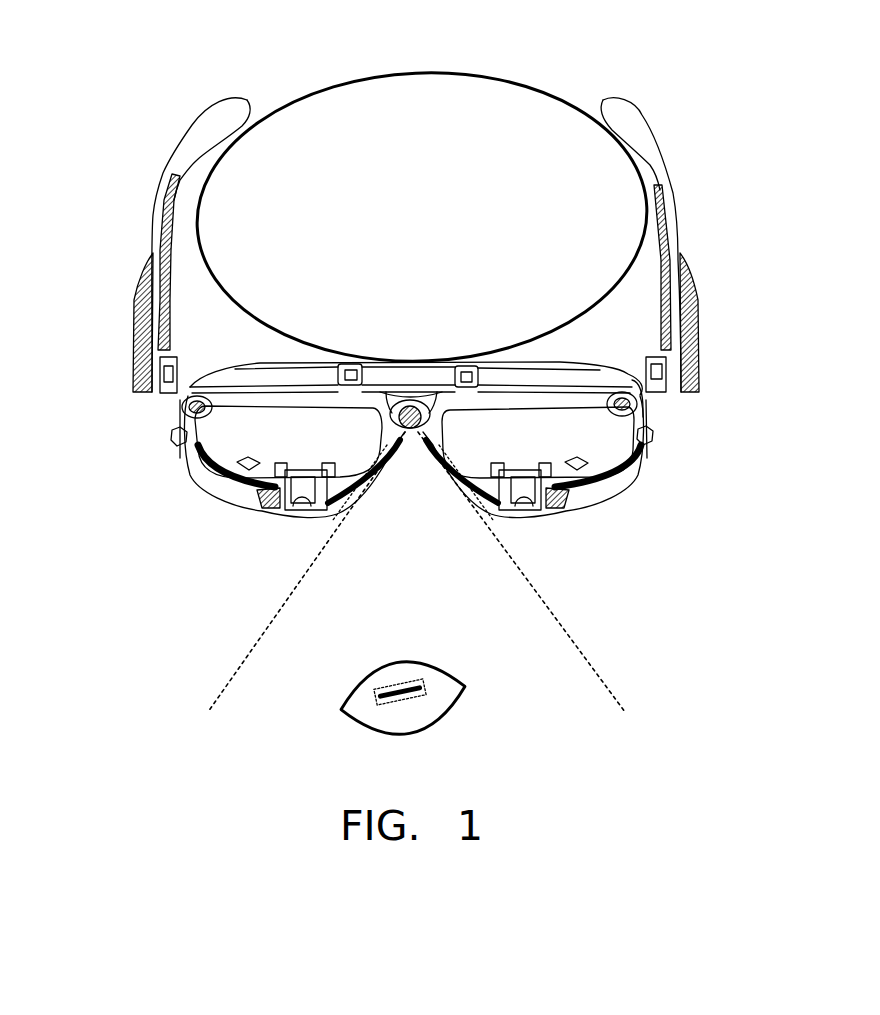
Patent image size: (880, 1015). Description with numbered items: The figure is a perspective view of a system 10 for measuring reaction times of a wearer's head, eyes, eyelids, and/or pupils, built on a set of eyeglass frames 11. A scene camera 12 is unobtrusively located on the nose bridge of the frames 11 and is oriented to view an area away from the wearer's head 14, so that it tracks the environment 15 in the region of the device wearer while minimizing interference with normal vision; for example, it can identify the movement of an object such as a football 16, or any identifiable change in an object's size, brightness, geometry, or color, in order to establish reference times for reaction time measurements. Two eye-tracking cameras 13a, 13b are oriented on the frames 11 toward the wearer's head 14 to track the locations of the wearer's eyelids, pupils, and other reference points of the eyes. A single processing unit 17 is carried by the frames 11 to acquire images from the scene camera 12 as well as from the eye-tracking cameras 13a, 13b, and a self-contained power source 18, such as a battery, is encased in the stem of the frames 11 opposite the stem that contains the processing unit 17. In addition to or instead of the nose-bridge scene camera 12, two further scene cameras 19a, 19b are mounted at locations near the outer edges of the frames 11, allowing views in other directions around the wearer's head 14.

The system 10 is at (240, 62).
The eyeglass frames 11 is at (152, 179).
The scene camera 12 is at (410, 436).
The eye-tracking camera 13a is at (297, 523).
The eye-tracking camera 13b is at (527, 523).
The wearer's head 14 is at (414, 66).
The environment 15 is at (250, 638).
The football 16 is at (397, 660).
The processing unit 17 is at (702, 339).
The power source 18 is at (127, 343).
The scene camera 19a is at (183, 408).
The scene camera 19b is at (640, 402).